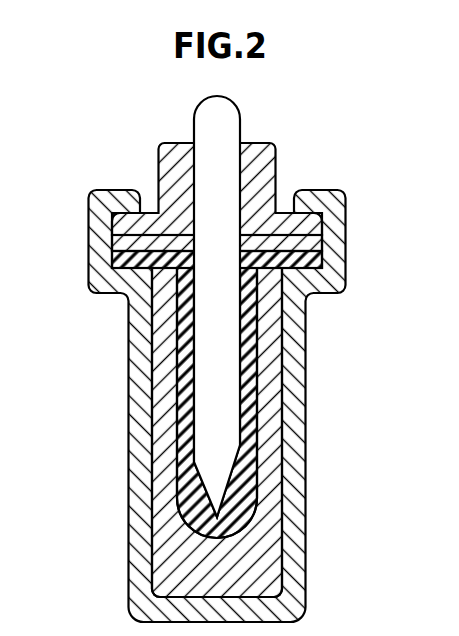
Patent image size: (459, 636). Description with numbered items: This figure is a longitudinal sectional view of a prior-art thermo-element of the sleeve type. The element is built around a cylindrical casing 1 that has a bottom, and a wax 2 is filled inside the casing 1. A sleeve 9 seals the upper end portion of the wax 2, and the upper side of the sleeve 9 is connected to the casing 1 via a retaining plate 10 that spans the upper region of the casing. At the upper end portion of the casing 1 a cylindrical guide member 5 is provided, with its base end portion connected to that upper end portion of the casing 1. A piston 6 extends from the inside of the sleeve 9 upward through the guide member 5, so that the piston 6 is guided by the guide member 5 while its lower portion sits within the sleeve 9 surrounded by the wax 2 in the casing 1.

The cylindrical casing 1 is at (287, 583).
The wax 2 is at (265, 537).
The cylindrical guide member 5 is at (160, 162).
The piston 6 is at (213, 343).
The sleeve 9 is at (248, 442).
The retaining plate 10 is at (143, 245).